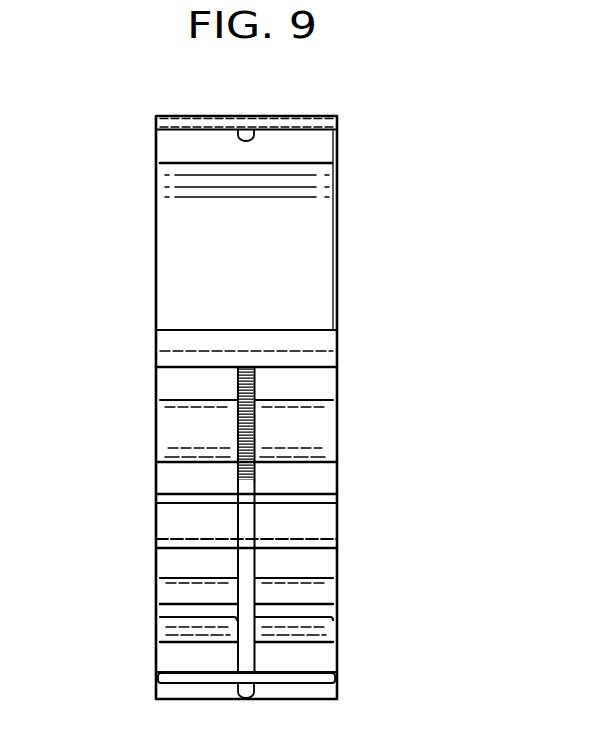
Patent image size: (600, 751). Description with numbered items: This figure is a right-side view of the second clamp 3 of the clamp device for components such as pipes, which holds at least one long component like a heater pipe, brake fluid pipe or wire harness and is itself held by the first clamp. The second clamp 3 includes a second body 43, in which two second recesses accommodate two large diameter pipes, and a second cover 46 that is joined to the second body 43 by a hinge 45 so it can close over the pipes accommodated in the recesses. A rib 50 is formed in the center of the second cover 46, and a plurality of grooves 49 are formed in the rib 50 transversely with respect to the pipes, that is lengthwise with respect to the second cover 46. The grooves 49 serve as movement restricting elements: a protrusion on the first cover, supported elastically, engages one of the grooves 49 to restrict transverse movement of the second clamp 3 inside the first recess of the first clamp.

The second clamp 3 is at (408, 134).
The second body 43 is at (297, 230).
The hinge 45 is at (310, 342).
The second cover 46 is at (297, 563).
The grooves 49 is at (260, 433).
The rib 50 is at (247, 528).